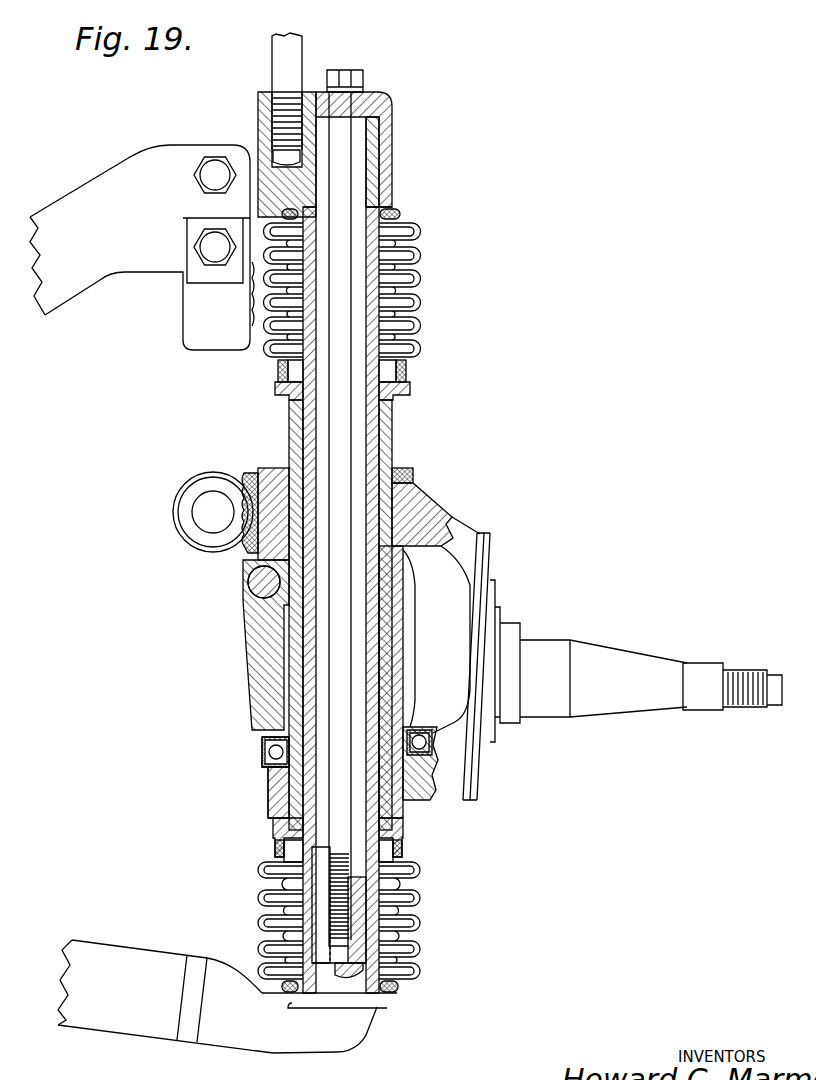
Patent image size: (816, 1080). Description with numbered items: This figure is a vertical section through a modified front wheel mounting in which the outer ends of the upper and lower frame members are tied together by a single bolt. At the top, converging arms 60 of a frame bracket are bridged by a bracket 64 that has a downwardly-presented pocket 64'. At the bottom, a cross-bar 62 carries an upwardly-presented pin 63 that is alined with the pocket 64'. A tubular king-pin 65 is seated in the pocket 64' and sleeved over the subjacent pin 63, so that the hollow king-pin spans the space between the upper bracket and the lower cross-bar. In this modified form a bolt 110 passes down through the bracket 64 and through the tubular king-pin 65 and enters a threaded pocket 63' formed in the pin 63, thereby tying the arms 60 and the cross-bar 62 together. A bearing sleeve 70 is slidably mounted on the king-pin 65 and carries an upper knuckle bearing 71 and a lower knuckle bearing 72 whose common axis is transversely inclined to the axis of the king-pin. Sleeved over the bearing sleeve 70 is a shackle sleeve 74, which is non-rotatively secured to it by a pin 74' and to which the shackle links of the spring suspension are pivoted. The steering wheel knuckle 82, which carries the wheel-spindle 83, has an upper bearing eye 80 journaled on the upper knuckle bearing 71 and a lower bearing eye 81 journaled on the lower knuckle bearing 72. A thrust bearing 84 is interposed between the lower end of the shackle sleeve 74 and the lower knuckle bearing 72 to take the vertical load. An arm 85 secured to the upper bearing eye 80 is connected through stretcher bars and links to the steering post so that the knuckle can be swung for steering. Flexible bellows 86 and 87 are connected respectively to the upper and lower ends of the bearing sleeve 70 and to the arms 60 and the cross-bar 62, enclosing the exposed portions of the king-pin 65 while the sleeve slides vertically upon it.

The converging arm 60 is at (92, 189).
The cross-bar 62 is at (113, 955).
The upwardly-presented pin 63 is at (334, 1009).
The threaded pocket 63' is at (387, 927).
The bracket 64 is at (352, 154).
The downwardly-presented pocket 64' is at (411, 162).
The tubular king-pin 65 is at (373, 183).
The bearing sleeve 70 is at (382, 636).
The upper knuckle bearing 71 is at (278, 470).
The lower knuckle bearing 72 is at (412, 815).
The shackle sleeve 74 is at (241, 643).
The pin 74' is at (236, 601).
The upper bearing eye 80 is at (400, 503).
The lower bearing eye 81 is at (430, 797).
The steering wheel knuckle 82 is at (490, 547).
The wheel-spindle 83 is at (570, 652).
The thrust bearing 84 is at (268, 757).
The arm 85 is at (212, 518).
The upper flexible bellows 86 is at (421, 283).
The lower flexible bellows 87 is at (417, 918).
The bolt 110 is at (340, 425).